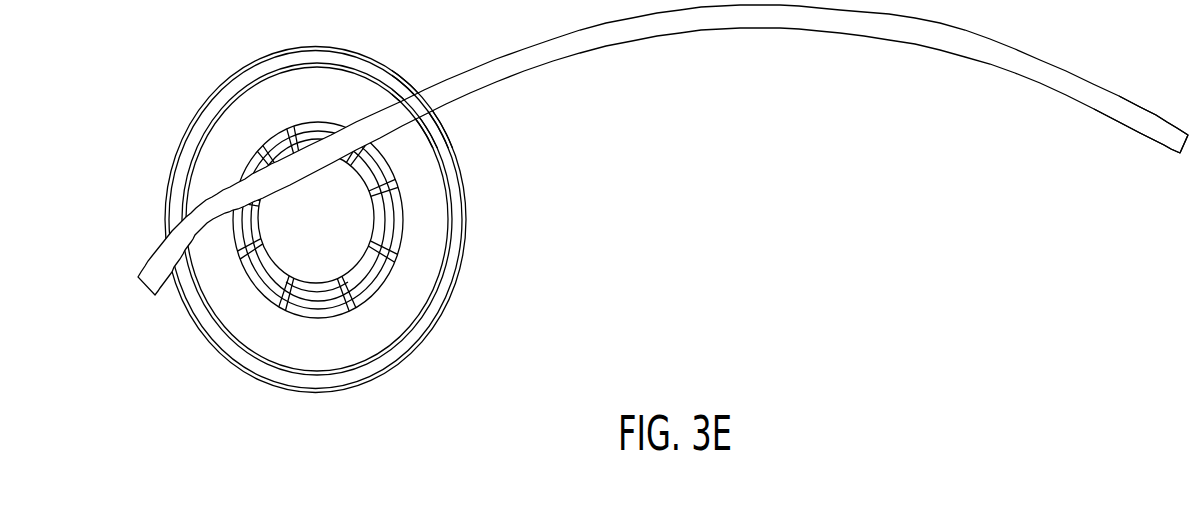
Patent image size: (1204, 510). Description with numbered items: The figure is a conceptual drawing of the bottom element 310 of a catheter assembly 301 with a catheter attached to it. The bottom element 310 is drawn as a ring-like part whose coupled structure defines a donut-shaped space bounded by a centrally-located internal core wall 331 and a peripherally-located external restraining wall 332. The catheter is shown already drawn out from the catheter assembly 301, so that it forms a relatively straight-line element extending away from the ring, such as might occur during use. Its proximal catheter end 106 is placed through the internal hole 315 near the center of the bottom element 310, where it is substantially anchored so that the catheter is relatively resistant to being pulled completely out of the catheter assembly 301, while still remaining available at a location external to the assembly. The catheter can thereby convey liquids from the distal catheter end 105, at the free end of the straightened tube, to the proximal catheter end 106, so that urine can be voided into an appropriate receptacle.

The distal catheter end 105 is at (1178, 122).
The proximal catheter end 106 is at (147, 292).
The catheter assembly 301 is at (367, 220).
The bottom element 310 is at (418, 78).
The internal hole 315 is at (273, 198).
The internal core wall 331 is at (442, 131).
The external restraining wall 332 is at (458, 294).